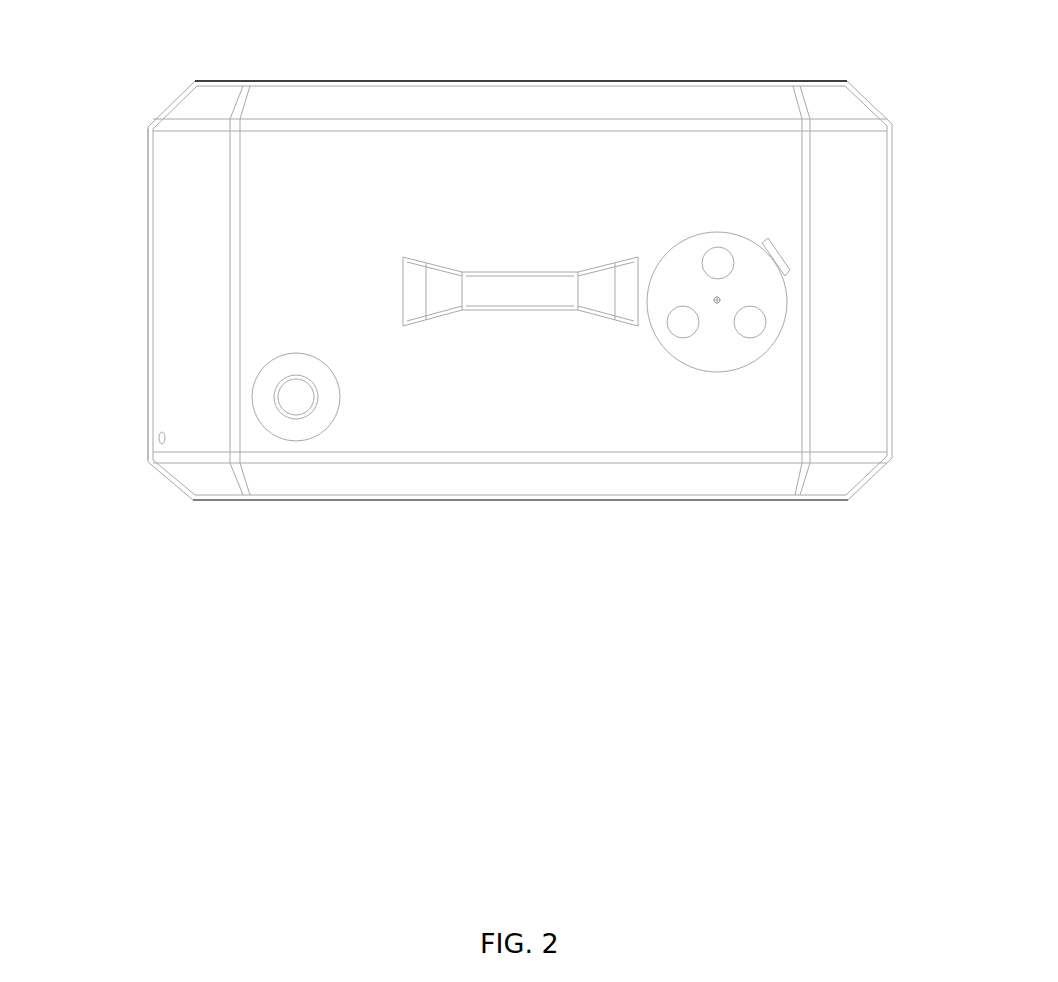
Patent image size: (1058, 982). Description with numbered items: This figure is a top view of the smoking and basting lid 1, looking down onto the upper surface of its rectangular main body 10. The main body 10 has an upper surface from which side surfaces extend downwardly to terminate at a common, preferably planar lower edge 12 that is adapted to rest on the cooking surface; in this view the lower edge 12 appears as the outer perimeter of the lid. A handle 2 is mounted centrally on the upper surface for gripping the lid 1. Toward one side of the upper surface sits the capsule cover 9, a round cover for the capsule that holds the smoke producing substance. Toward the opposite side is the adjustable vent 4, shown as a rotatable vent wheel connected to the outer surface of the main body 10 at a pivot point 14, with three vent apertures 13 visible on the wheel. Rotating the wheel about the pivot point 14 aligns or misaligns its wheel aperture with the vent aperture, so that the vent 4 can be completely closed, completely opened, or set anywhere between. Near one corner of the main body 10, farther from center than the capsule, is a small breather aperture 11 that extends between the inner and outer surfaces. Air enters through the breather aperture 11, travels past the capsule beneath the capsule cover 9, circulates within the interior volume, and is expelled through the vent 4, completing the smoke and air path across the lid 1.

The smoking and basting lid 1 is at (373, 146).
The handle 2 is at (513, 254).
The adjustable vent 4 is at (805, 302).
The capsule cover 9 is at (307, 445).
The main body 10 is at (124, 264).
The breather aperture 11 is at (148, 454).
The lower edge 12 is at (271, 72).
The vent apertures 13 is at (718, 250).
The pivot point 14 is at (738, 292).